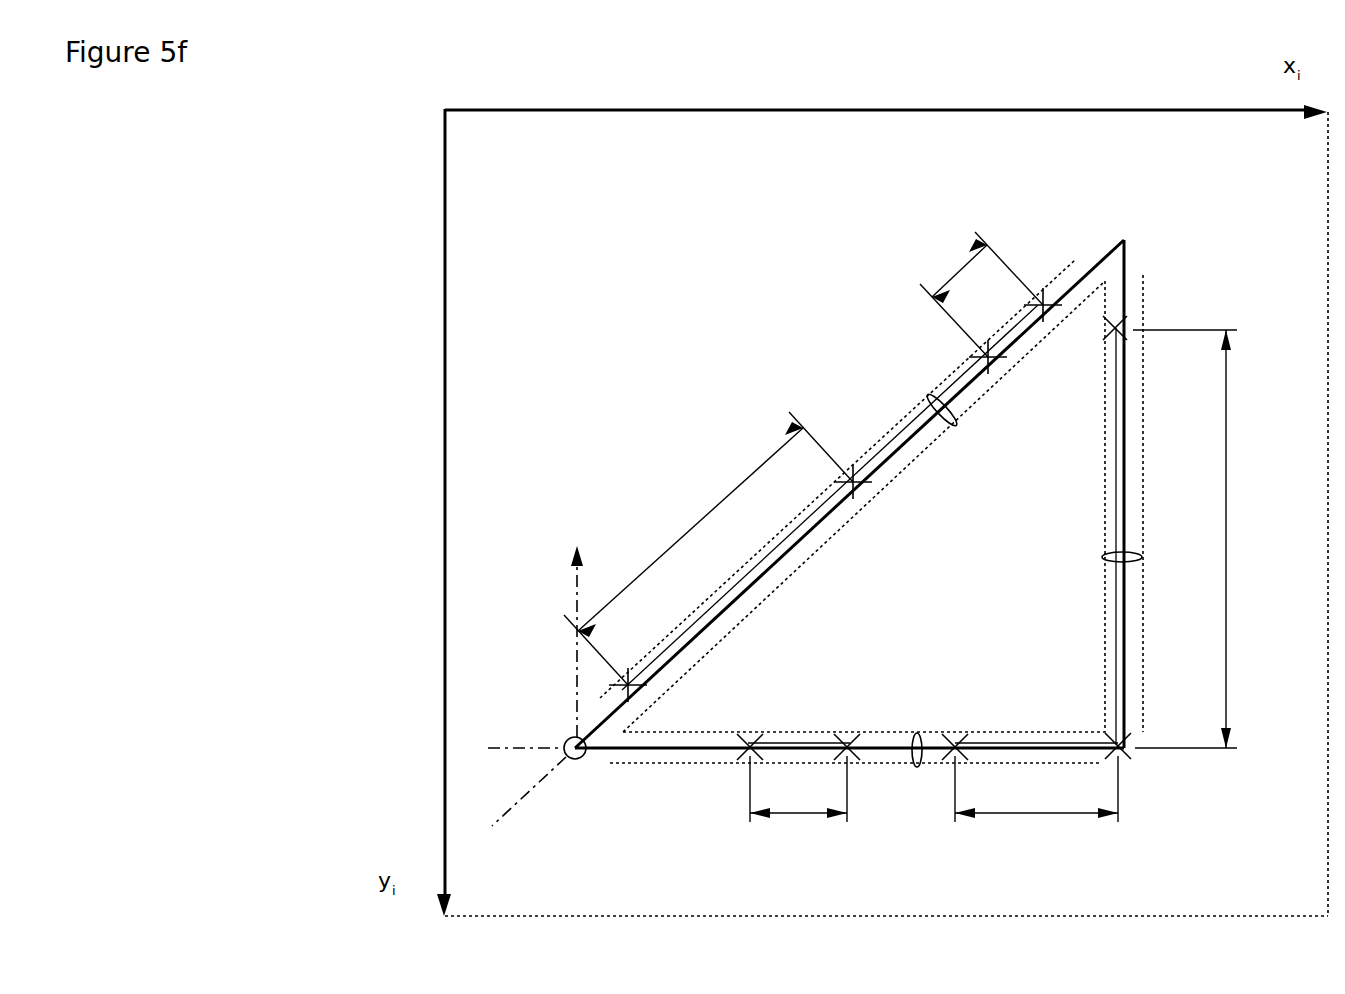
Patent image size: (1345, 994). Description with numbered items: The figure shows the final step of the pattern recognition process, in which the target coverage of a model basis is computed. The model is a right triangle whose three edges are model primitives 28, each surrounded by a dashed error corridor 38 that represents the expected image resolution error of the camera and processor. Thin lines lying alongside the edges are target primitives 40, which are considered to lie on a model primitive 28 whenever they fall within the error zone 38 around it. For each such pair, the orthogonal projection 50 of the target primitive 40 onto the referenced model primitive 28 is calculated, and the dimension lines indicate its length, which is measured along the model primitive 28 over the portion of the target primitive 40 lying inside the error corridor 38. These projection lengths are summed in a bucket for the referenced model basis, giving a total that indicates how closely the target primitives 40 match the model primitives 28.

The model primitive 28 is at (665, 748).
The error zone 38 is at (917, 733).
The target primitive 40 is at (742, 583).
The orthogonal projection 50 is at (915, 537).